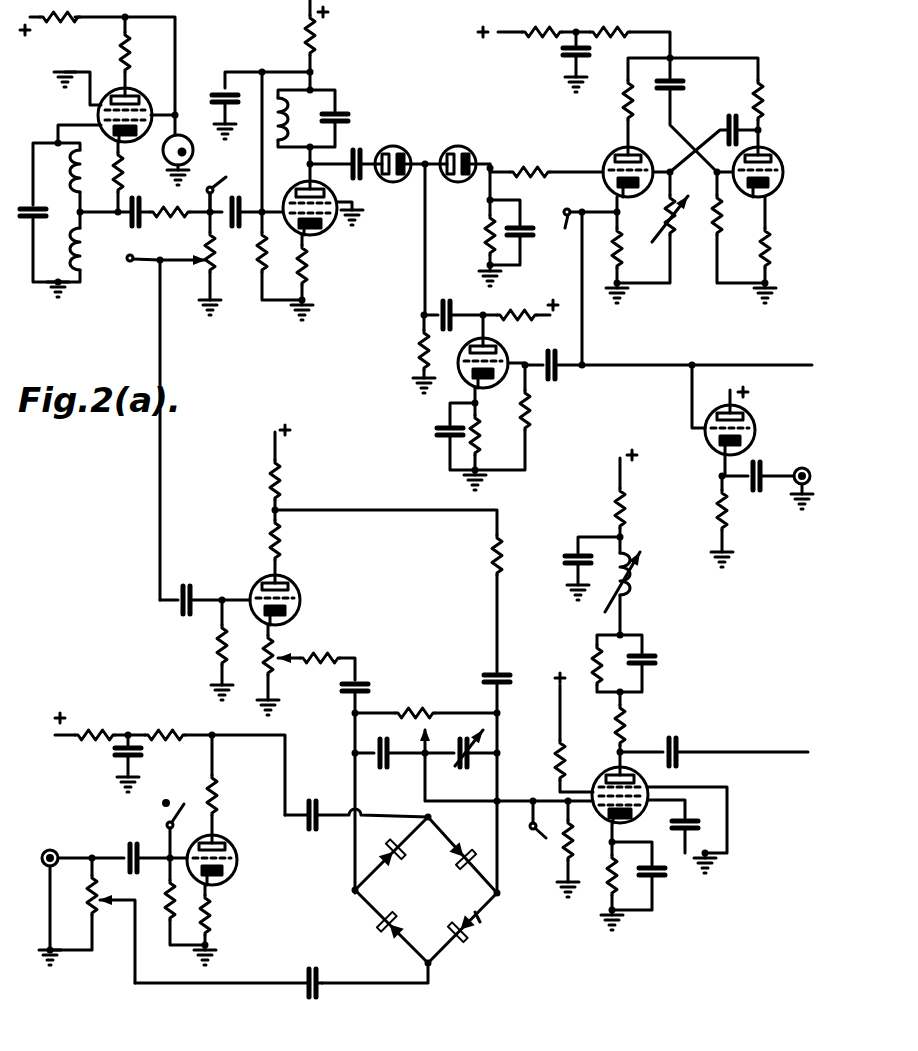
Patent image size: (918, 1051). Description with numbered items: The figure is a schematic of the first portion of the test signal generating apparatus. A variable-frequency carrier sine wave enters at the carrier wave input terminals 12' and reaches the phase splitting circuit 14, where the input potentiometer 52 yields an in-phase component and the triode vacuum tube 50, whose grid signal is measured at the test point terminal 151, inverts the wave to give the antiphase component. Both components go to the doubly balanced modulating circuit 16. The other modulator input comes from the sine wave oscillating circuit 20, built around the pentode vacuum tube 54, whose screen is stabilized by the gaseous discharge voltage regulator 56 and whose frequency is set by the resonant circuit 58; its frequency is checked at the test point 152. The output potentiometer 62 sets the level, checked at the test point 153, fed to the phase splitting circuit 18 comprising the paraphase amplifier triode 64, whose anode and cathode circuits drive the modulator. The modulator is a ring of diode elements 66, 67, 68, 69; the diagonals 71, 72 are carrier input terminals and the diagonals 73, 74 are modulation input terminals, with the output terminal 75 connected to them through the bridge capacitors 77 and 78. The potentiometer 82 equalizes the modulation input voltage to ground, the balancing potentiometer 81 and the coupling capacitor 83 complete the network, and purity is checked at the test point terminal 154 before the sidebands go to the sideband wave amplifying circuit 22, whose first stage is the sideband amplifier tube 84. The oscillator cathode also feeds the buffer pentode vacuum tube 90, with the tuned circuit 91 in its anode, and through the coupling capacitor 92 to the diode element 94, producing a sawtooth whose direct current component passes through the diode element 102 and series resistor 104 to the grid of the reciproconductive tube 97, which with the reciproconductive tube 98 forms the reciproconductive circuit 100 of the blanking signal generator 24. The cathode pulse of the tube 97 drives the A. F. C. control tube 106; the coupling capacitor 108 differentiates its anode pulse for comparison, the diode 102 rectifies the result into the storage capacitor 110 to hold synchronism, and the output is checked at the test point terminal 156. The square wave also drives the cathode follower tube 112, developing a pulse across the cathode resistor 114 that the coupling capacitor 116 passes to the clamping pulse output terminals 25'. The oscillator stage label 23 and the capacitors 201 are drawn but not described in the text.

The carrier wave input terminals 12' is at (112, 844).
The phase splitting circuit 14 is at (125, 838).
The doubly balanced modulating circuit 16 is at (421, 901).
The phase splitting circuit 18 is at (245, 553).
The sine wave oscillating circuit 20 is at (73, 63).
The sideband wave amplifying circuit 22 is at (758, 741).
The oscillator stage 23 is at (408, 65).
The blanking signal generator 24 is at (725, 49).
The clamping pulse output terminals 25' is at (779, 504).
The vacuum tube 50 is at (228, 856).
The input potentiometer 52 is at (105, 925).
The pentode vacuum tube 54 is at (163, 80).
The gaseous discharge voltage regulator 56 is at (136, 176).
The resonant circuit 58 is at (46, 160).
The output potentiometer 62 is at (222, 262).
The paraphase amplifier triode 64 is at (300, 601).
The diode element 66 is at (462, 901).
The diode element 67 is at (478, 932).
The diode element 68 is at (393, 940).
The diode element 69 is at (385, 848).
The carrier input terminal 71 is at (442, 820).
The carrier input terminal 72 is at (430, 970).
The modulation input terminal 73 is at (353, 890).
The modulation input terminal 74 is at (500, 895).
The output terminal 75 is at (423, 760).
The bridge capacitor 77 is at (375, 764).
The bridge capacitor 78 is at (470, 768).
The modulator balancing potentiometer 81 is at (418, 710).
The potentiometer 82 is at (288, 646).
The coupling capacitor 83 is at (343, 696).
The sideband amplifier tube 84 is at (605, 772).
The pentode vacuum tube 90 is at (320, 238).
The tuned circuit 91 is at (316, 118).
The coupling capacitor 92 is at (362, 152).
The diode element 94 is at (393, 186).
The reciproconductive tube 97 is at (605, 159).
The reciproconductive tube 98 is at (776, 160).
The reciproconductive circuit 100 is at (718, 119).
The diode element 102 is at (486, 141).
The series resistor 104 is at (548, 154).
The A. F. C. control tube 106 is at (495, 340).
The coupling capacitor 108 is at (462, 292).
The storage capacitor 110 is at (538, 230).
The cathode follower tube 112 is at (745, 408).
The cathode resistor 114 is at (710, 506).
The coupling capacitor 116 is at (773, 450).
The test point terminal 151 is at (180, 861).
The test point 152 is at (202, 173).
The test point 153 is at (134, 427).
The test point terminal 154 is at (531, 837).
The test point terminal 156 is at (576, 287).
The coupling capacitor 201 is at (305, 830).